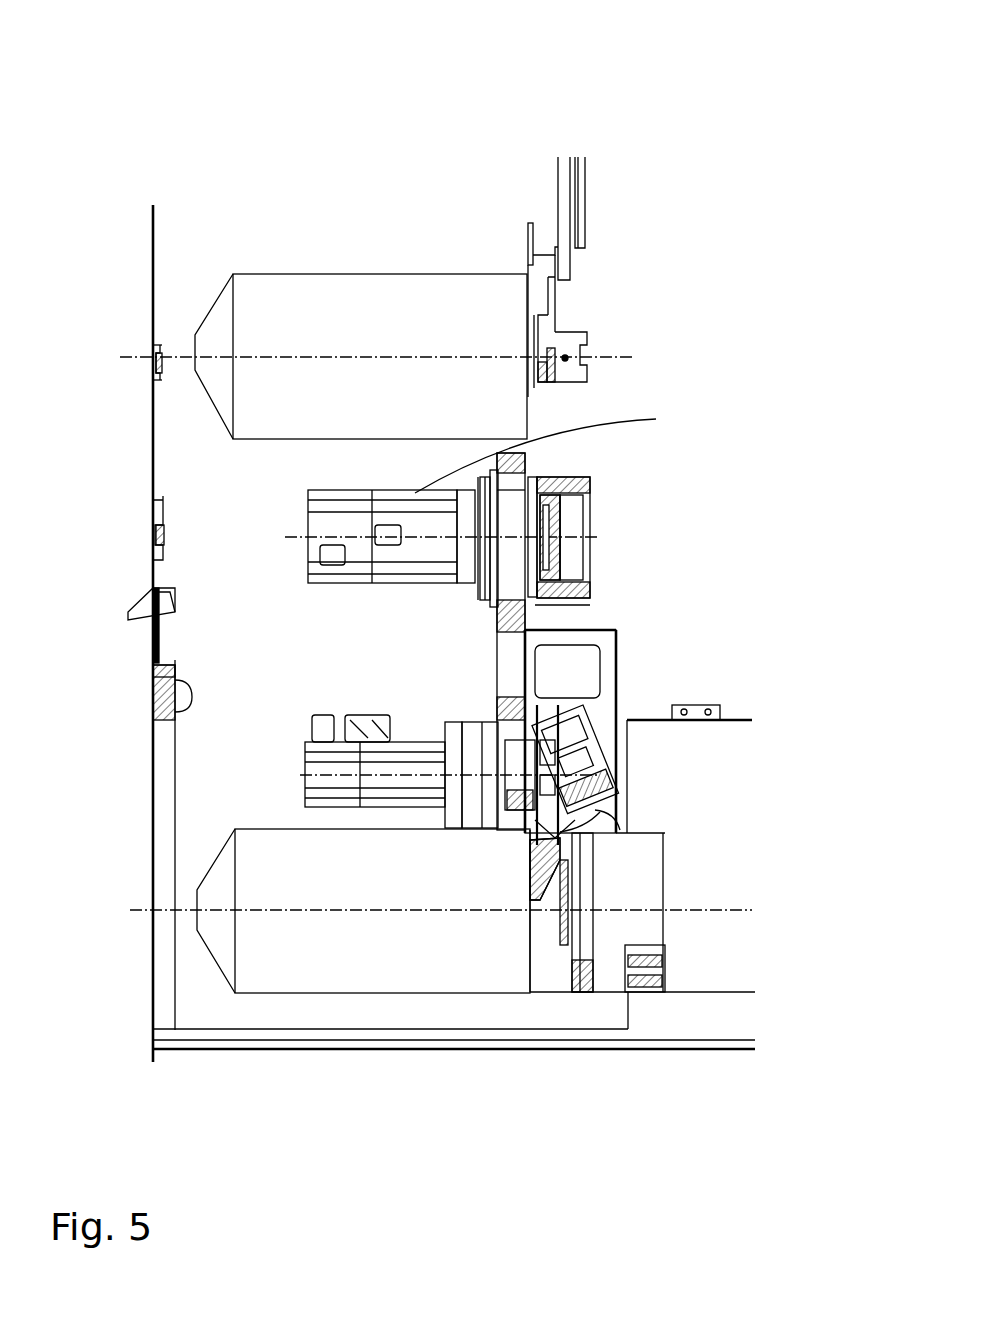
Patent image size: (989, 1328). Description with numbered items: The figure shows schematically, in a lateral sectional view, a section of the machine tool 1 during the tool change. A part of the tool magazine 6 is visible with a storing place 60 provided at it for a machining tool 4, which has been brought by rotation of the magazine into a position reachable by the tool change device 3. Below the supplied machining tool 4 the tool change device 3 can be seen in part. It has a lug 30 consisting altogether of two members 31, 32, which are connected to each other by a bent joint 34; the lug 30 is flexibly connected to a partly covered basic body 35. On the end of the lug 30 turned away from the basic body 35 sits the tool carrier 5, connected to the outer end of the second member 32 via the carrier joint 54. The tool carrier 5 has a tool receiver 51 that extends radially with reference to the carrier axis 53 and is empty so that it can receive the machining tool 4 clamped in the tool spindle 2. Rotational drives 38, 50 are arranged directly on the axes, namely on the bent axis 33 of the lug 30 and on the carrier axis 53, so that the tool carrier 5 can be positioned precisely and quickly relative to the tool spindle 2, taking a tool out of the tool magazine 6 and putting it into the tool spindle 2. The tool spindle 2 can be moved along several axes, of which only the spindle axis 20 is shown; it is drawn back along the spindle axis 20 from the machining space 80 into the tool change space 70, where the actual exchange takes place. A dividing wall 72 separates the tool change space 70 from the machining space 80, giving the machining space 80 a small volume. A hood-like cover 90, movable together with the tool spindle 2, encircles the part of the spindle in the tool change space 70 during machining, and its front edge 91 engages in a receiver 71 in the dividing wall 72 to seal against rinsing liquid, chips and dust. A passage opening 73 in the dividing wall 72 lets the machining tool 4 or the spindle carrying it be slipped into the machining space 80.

The machine tool 1 is at (150, 120).
The tool spindle 2 is at (565, 900).
The tool change device 3 is at (742, 500).
The machining tool 4 is at (365, 300).
The tool carrier 5 is at (630, 800).
The tool magazine 6 is at (588, 157).
The spindle axis 20 is at (632, 357).
The lug 30 is at (608, 594).
The first member 31 is at (575, 485).
The second member 32 is at (418, 742).
The bent axis 33 is at (558, 540).
The bent joint 34 is at (557, 502).
The basic body 35 is at (497, 660).
The rotational drive 38 is at (555, 442).
The drive 50 is at (540, 690).
The tool receiver 51 is at (545, 855).
The carrier axis 53 is at (620, 765).
The carrier joint 54 is at (558, 712).
The storing place 60 is at (568, 318).
The tool change space 70 is at (178, 318).
The receiver 71 is at (175, 705).
The dividing wall 72 is at (152, 560).
The passage opening 73 is at (152, 970).
The machining space 80 is at (146, 808).
The cover 90 is at (745, 720).
The front edge 91 is at (725, 705).